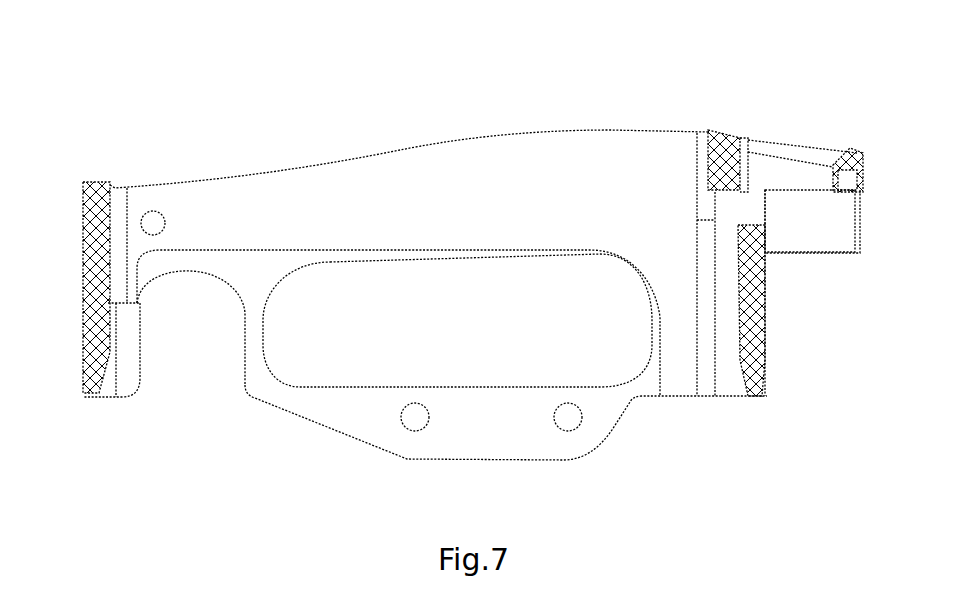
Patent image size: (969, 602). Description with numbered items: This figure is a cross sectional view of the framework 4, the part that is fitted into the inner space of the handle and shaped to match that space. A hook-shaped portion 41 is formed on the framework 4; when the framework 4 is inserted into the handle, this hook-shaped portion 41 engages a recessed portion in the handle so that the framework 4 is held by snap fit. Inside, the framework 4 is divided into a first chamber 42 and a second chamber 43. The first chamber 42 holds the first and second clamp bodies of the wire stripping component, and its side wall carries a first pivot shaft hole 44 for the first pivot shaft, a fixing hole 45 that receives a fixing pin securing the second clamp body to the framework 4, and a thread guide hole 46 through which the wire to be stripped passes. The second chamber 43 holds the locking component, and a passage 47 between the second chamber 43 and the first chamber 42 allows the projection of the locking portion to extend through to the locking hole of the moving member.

The framework 4 is at (438, 158).
The hook-shaped portion 41 is at (83, 363).
The first chamber 42 is at (497, 220).
The second chamber 43 is at (795, 178).
The first pivot shaft hole 44 is at (233, 293).
The fixing hole 45 is at (412, 428).
The thread guide hole 46 is at (640, 365).
The passage 47 is at (748, 218).